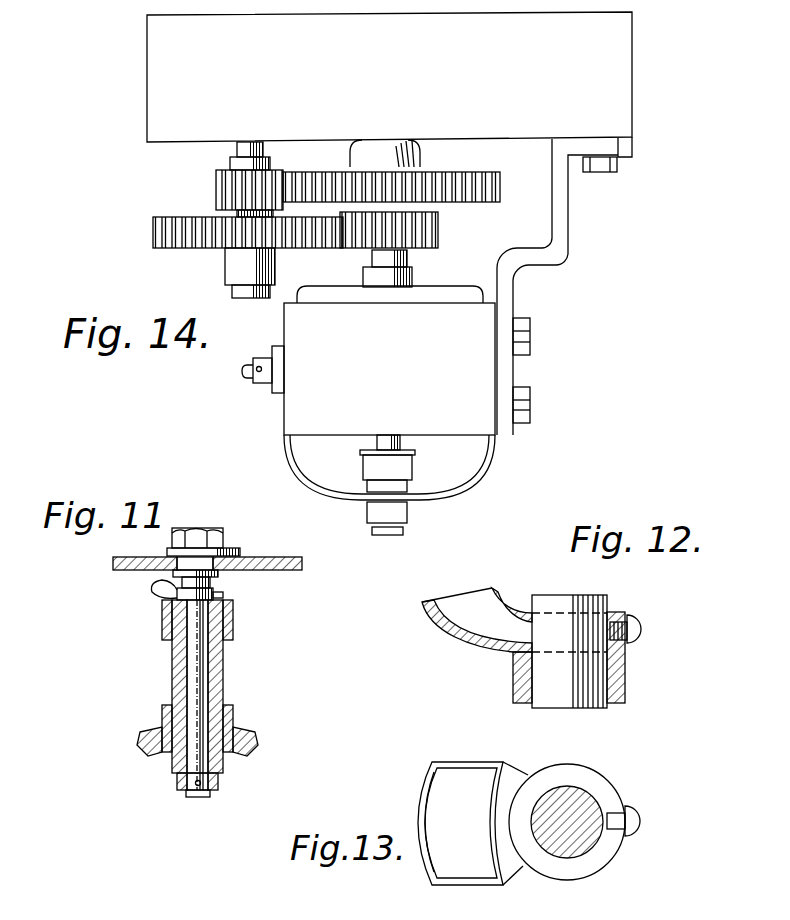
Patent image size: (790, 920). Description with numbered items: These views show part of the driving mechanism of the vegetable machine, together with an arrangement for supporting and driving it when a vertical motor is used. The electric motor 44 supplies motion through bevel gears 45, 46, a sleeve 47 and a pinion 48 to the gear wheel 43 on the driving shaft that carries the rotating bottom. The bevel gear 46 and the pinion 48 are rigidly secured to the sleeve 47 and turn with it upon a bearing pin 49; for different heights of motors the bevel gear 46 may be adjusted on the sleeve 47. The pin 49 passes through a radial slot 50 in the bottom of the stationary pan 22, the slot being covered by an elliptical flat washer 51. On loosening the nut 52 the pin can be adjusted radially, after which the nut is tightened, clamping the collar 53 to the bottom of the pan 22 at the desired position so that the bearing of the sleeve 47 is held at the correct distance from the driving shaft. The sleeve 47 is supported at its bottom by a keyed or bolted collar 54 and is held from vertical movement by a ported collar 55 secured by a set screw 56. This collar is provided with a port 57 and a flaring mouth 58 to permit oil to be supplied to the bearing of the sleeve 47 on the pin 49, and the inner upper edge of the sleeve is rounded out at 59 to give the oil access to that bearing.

In FIG. 14, the stationary pan 22 is at (618, 105).
In FIG. 14, the gear wheel 43 is at (477, 170).
In FIG. 14, the electric motor 44 is at (389, 360).
In FIG. 14, the bevel gear 45 is at (420, 232).
In FIG. 14, the bevel gear 46 is at (312, 233).
In FIG. 11, the bevel gear 46 is at (222, 730).
In FIG. 14, the sleeve 47 is at (235, 267).
In FIG. 11, the sleeve 47 is at (225, 668).
In FIG. 12, the sleeve 47 is at (612, 695).
In FIG. 14, the pinion 48 is at (237, 187).
In FIG. 11, the pinion 48 is at (168, 636).
In FIG. 14, the bearing pin 49 is at (253, 147).
In FIG. 11, the bearing pin 49 is at (205, 690).
In FIG. 11, the radial slot 50 is at (175, 568).
In FIG. 11, the elliptical flat washer 51 is at (240, 553).
In FIG. 11, the nut 52 is at (269, 529).
In FIG. 11, the collar 53 is at (220, 574).
In FIG. 11, the collar 54 is at (220, 785).
In FIG. 11, the ported collar 55 is at (226, 601).
In FIG. 12, the ported collar 55 is at (628, 648).
In FIG. 12, the set screw 56 is at (643, 629).
In FIG. 12, the port 57 is at (468, 620).
In FIG. 13, the port 57 is at (452, 785).
In FIG. 11, the flaring mouth 58 is at (160, 592).
In FIG. 12, the flaring mouth 58 is at (473, 606).
In FIG. 13, the flaring mouth 58 is at (425, 858).
In FIG. 12, the rounded inner upper edge 59 is at (515, 662).